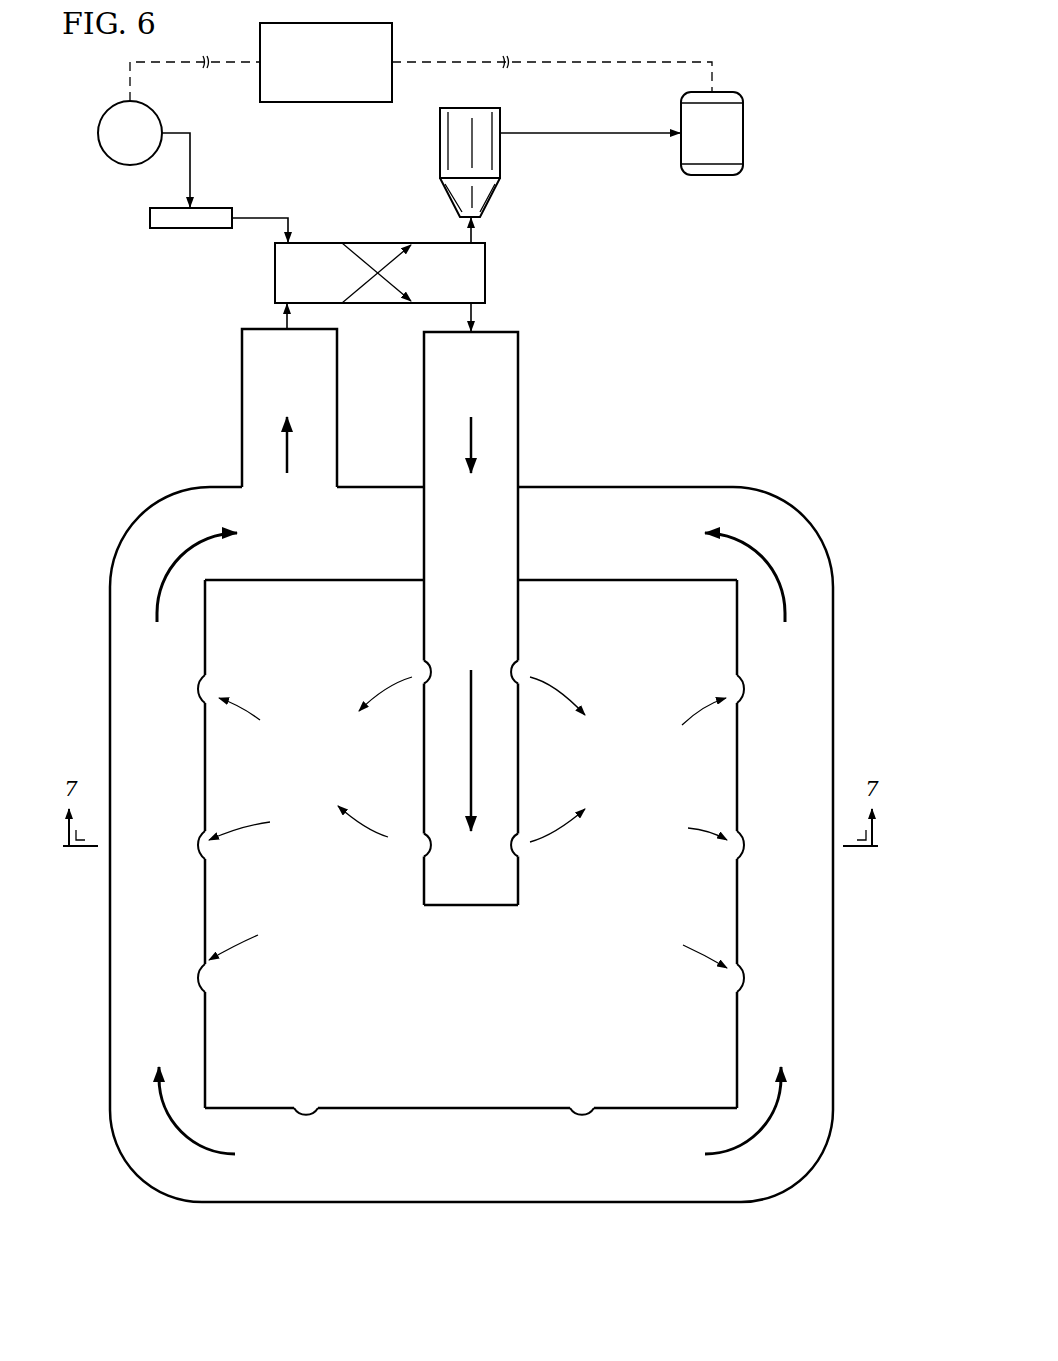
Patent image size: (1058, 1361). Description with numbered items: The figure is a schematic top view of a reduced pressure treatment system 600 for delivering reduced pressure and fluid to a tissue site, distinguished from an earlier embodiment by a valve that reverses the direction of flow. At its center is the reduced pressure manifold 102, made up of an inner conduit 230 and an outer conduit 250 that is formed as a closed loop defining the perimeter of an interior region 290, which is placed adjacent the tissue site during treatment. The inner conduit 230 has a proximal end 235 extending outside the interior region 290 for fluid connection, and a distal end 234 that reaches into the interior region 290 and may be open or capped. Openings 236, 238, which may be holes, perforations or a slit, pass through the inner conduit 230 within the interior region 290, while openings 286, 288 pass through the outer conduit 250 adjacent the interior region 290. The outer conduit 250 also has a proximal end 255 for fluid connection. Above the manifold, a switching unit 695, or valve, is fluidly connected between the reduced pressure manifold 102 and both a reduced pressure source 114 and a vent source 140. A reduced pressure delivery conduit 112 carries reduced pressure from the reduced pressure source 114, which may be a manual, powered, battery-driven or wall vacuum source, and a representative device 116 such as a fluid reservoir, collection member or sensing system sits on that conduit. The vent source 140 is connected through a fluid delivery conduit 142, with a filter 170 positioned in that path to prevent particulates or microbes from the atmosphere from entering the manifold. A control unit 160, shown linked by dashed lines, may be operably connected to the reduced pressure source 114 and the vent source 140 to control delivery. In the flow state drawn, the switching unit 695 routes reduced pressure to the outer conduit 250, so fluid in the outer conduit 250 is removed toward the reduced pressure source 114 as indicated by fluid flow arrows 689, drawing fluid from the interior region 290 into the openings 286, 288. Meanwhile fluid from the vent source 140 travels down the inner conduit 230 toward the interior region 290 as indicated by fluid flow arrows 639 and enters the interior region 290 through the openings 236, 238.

The reduced pressure treatment system 600 is at (828, 68).
The reduced pressure manifold 102 is at (705, 434).
The reduced-pressure delivery conduit 112 is at (578, 132).
The reduced-pressure source 114 is at (744, 118).
The representative device 116 is at (439, 142).
The vent source 140 is at (114, 108).
The fluid delivery conduit 142 is at (186, 171).
The control unit 160 is at (313, 73).
The filter 170 is at (180, 229).
The inner conduit 230 is at (519, 612).
The distal end 234 is at (455, 906).
The proximal end 235 is at (519, 397).
The opening 236 is at (422, 850).
The opening 238 is at (521, 850).
The outer conduit 250 is at (108, 597).
The proximal end 255 is at (241, 397).
The opening 286 is at (207, 686).
The opening 288 is at (735, 686).
The interior region 290 is at (455, 1063).
The fluid flow arrows 639 is at (475, 437).
The fluid flow arrows 689 is at (283, 452).
The switching unit 695 is at (322, 242).